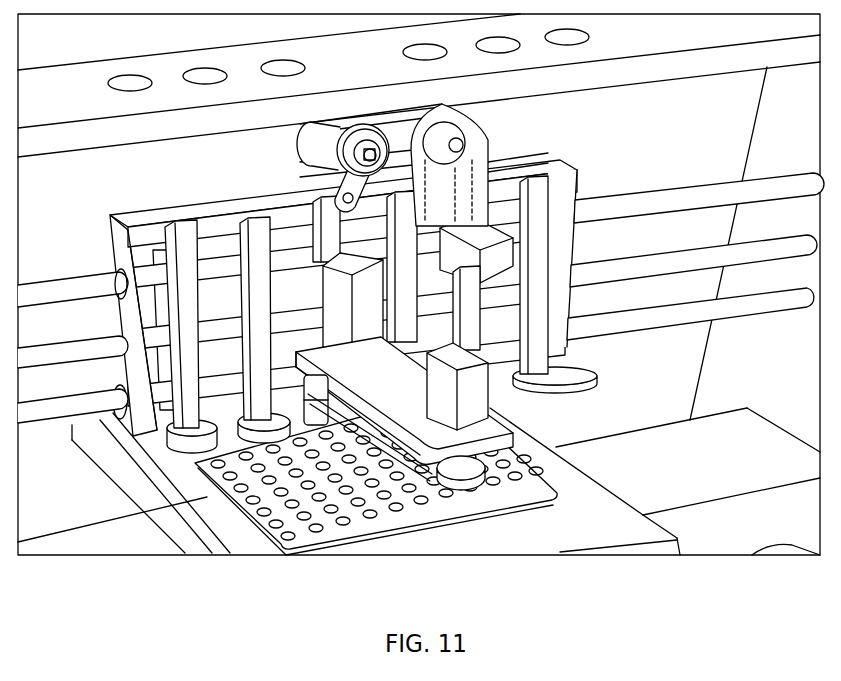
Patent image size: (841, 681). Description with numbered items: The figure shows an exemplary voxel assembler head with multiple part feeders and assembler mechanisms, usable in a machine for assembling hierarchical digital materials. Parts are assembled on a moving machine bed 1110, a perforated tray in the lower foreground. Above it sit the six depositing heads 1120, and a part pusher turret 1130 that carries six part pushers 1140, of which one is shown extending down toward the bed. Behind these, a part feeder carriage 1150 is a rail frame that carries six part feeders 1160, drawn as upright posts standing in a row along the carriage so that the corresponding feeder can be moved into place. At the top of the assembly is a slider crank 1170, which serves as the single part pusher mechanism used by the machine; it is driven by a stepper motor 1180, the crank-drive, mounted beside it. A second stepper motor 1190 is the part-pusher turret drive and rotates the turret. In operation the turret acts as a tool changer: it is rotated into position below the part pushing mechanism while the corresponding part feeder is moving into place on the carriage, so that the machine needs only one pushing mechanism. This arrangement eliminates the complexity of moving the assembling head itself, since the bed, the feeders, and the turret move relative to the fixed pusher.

The moving machine bed 1110 is at (222, 512).
The depositing heads 1120 is at (303, 418).
The part pusher turret 1130 is at (348, 412).
The part pushers 1140 is at (302, 402).
The part feeder carriage 1150 is at (117, 240).
The part feeders 1160 is at (322, 219).
The slider crank 1170 is at (305, 170).
The stepper motor (crank-drive) 1180 is at (503, 250).
The stepper motor (part-pusher turret drive) 1190 is at (477, 392).